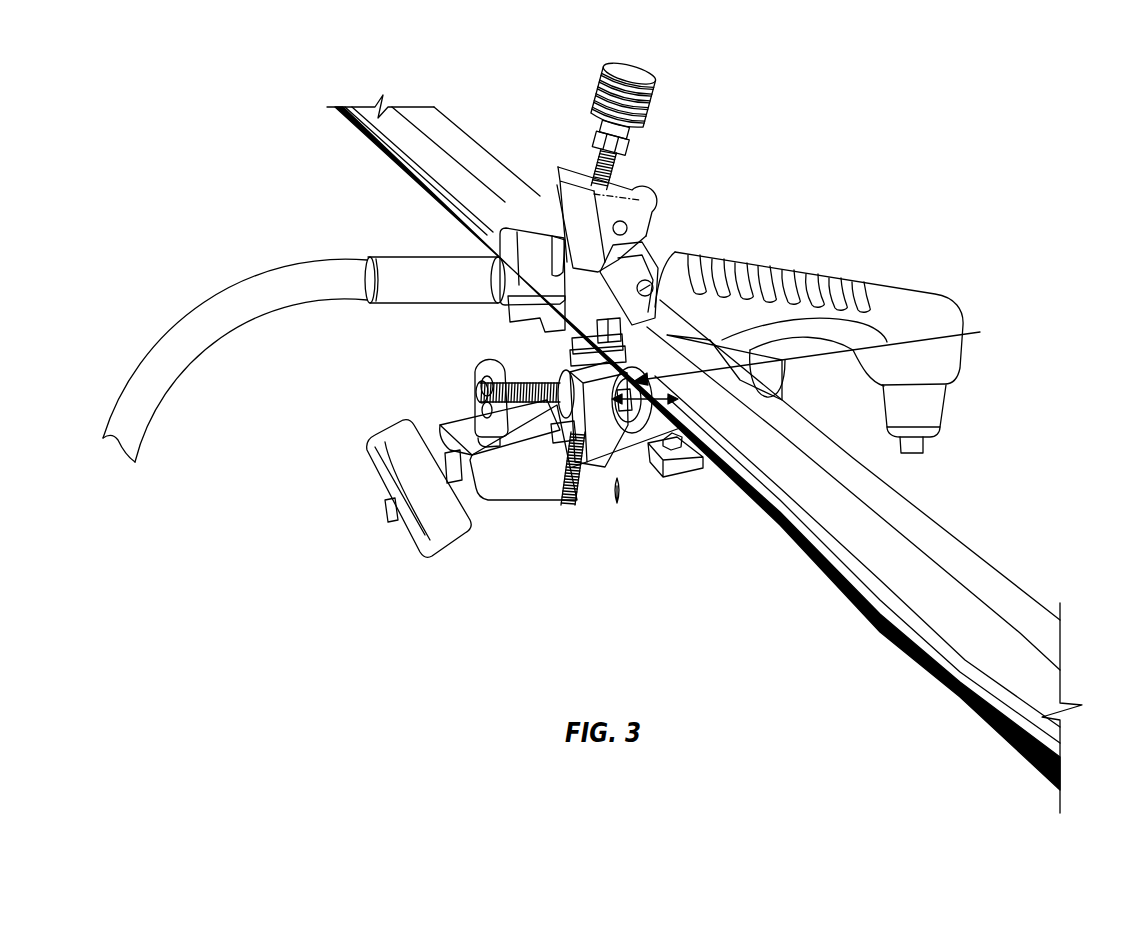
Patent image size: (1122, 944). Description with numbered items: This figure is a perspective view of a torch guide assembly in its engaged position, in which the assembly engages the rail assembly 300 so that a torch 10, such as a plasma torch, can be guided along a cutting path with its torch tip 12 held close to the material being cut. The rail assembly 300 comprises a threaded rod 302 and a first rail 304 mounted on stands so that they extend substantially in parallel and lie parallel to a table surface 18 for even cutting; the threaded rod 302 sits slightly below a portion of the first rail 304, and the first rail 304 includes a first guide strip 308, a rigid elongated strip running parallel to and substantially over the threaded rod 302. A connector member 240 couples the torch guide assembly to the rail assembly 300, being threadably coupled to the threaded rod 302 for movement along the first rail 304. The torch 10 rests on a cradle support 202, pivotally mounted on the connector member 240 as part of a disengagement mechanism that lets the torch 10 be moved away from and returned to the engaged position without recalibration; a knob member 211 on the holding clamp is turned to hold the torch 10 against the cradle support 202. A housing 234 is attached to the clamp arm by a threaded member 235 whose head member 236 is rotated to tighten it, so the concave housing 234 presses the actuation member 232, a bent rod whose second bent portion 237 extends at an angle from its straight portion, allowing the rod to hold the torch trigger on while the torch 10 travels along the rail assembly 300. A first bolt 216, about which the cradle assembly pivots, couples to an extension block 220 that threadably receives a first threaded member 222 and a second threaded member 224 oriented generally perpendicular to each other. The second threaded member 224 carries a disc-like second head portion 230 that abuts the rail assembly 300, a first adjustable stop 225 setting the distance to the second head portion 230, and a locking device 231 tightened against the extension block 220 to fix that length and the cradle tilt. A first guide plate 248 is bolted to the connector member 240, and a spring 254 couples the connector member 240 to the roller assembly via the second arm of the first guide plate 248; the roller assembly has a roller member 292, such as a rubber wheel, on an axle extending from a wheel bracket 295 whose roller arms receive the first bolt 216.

The torch 10 is at (853, 288).
The torch tip 12 is at (912, 453).
The table surface 18 is at (792, 679).
The cradle support 202 is at (540, 332).
The knob member 211 is at (655, 97).
The first bolt 216 is at (568, 482).
The extension block 220 is at (603, 425).
The first threaded member 222 is at (548, 305).
The second threaded member 224 is at (490, 375).
The first adjustable stop 225 is at (818, 361).
The second head portion 230 is at (650, 388).
The locking device 231 is at (562, 380).
The actuation member 232 is at (722, 338).
The housing 234 is at (582, 243).
The threaded member 235 is at (648, 290).
The head member 236 is at (650, 262).
The second bent portion 237 is at (630, 250).
The connector member 240 is at (632, 452).
The first guide plate 248 is at (487, 366).
The spring 254 is at (482, 424).
The roller member 292 is at (442, 542).
The wheel bracket 295 is at (497, 490).
The rail assembly 300 is at (1013, 553).
The threaded rod 302 is at (752, 504).
The first rail 304 is at (947, 636).
The first guide strip 308 is at (880, 540).